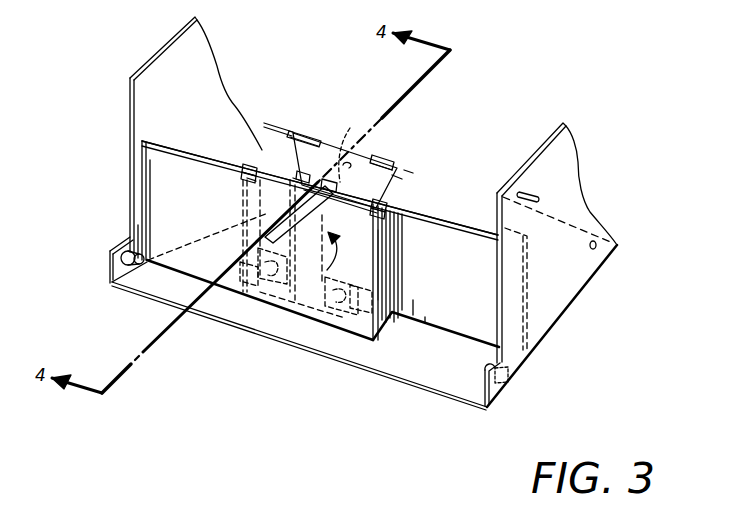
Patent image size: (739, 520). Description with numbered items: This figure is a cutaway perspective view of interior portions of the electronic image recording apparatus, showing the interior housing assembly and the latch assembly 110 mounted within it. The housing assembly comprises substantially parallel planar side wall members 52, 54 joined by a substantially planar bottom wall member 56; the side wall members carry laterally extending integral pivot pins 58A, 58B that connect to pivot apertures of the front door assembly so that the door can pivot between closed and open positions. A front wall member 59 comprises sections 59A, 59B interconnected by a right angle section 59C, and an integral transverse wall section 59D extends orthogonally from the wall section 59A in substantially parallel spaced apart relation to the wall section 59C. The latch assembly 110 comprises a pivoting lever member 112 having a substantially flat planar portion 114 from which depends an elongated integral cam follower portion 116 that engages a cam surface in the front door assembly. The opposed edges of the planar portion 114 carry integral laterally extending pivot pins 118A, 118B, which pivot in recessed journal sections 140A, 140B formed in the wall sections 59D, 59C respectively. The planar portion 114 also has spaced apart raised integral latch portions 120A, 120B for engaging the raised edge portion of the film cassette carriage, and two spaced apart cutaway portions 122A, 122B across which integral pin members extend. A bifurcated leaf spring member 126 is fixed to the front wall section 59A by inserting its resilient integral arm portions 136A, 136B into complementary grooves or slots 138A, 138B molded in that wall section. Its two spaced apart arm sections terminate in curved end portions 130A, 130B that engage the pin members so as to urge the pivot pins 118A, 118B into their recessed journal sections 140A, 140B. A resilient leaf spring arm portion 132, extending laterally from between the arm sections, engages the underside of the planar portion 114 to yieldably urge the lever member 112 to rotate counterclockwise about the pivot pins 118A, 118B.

The side wall member 52 is at (136, 66).
The side wall member 54 is at (565, 283).
The bottom wall member 56 is at (424, 376).
The pivot pin 58A is at (520, 370).
The pivot pin 58B is at (132, 246).
The front wall member 59 is at (165, 141).
The front wall section 59A is at (126, 266).
The front wall section 59B is at (473, 325).
The right angle section 59C is at (383, 268).
The transverse wall section 59D is at (243, 178).
The latch assembly 110 is at (373, 143).
The pivoting lever member 112 is at (397, 188).
The planar portion 114 is at (330, 163).
The cam follower portion 116 is at (284, 190).
The pivot pin 118A is at (248, 162).
The pivot pin 118B is at (390, 212).
The latch portion 120A is at (306, 133).
The latch portion 120B is at (394, 173).
The cutaway portion 122A is at (248, 180).
The cutaway portion 122B is at (398, 177).
The bifurcated leaf spring member 126 is at (315, 302).
The curved end portion 130A is at (297, 179).
The curved end portion 130B is at (411, 171).
The resilient leaf spring arm portion 132 is at (350, 129).
The resilient arm portion 136A is at (268, 305).
The resilient arm portion 136B is at (330, 300).
The slot 138A is at (233, 300).
The slot 138B is at (380, 346).
The recessed journal section 140A is at (243, 176).
The recessed journal section 140B is at (393, 222).